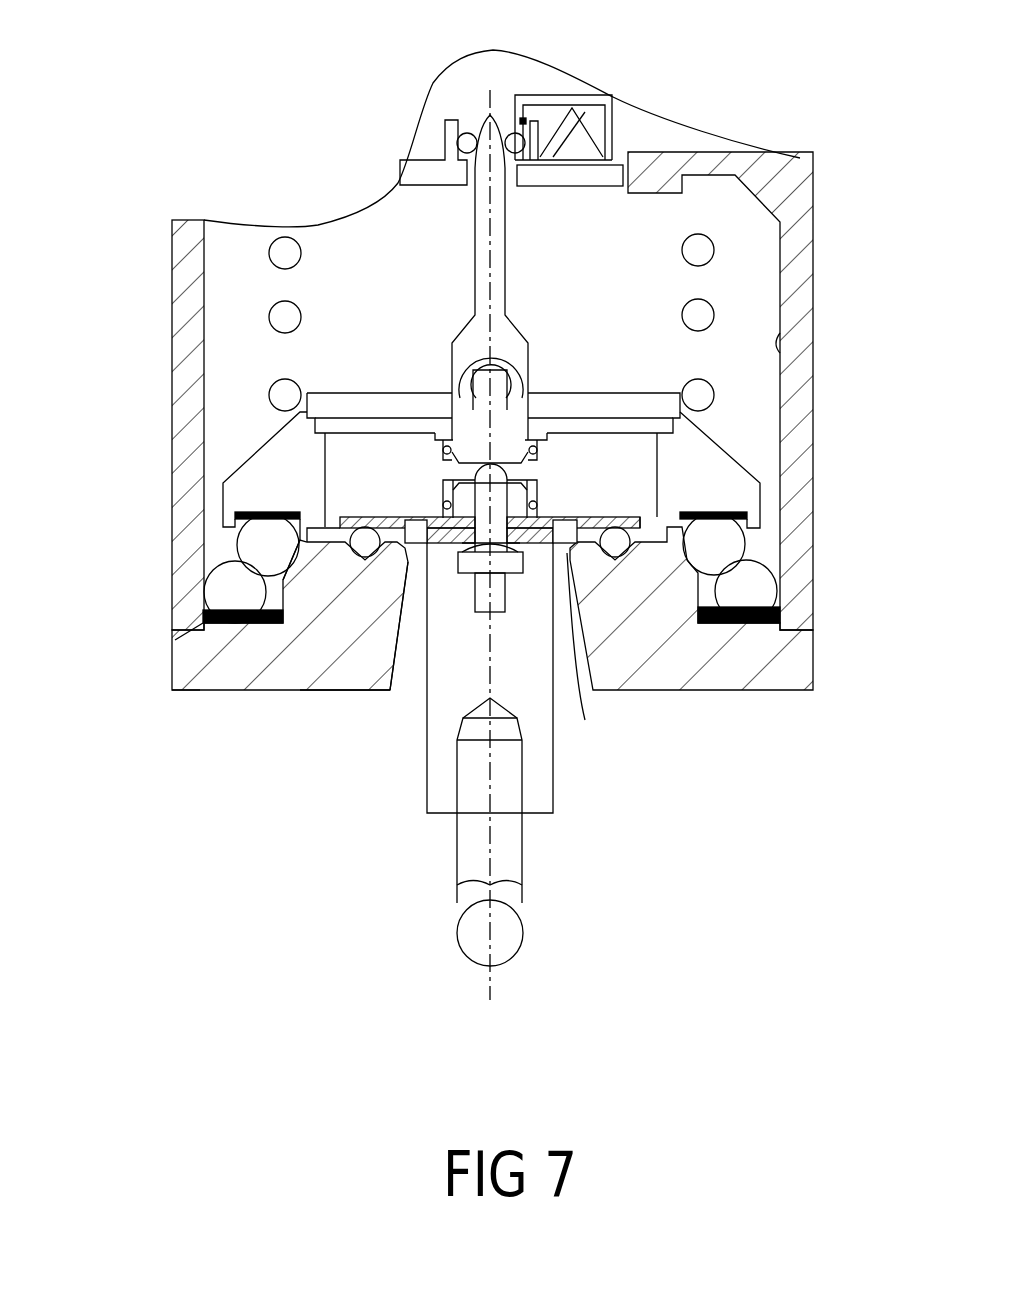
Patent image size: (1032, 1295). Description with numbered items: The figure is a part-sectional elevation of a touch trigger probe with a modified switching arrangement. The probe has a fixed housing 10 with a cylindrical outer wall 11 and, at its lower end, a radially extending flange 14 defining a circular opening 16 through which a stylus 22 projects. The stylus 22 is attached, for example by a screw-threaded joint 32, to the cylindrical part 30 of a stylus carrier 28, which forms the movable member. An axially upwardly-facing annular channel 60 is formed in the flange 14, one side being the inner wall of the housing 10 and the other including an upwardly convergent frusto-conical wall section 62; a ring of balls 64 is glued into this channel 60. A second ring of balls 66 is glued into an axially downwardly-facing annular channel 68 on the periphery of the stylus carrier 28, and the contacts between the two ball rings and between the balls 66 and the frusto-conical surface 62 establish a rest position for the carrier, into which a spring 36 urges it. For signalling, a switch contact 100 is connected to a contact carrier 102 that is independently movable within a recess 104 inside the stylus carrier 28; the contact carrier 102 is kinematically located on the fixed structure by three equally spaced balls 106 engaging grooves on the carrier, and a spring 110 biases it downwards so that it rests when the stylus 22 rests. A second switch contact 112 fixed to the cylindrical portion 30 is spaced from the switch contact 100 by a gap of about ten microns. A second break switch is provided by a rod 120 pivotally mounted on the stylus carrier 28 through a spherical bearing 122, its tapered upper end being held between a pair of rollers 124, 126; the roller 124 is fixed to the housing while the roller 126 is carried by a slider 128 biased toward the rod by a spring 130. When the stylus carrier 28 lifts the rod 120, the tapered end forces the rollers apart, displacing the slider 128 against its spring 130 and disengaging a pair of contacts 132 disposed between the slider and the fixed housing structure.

The housing 10 is at (812, 275).
The cylindrical outer wall 11 is at (780, 335).
The flange 14 is at (322, 688).
The opening 16 is at (407, 680).
The stylus 22 is at (475, 848).
The stylus carrier 28 is at (755, 500).
The cylindrical part 30 is at (547, 762).
The screw-threaded joint 32 is at (523, 800).
The spring 36 is at (712, 250).
The annular channel 60 is at (303, 537).
The frusto-conical wall section 62 is at (173, 688).
The ring of balls 64 is at (213, 592).
The second ring of balls 66 is at (248, 542).
The annular channel 68 is at (238, 517).
The switch contact 100 is at (585, 720).
The contact carrier 102 is at (645, 452).
The recess 104 is at (700, 430).
The balls 106 is at (622, 547).
The spring 110 is at (443, 480).
The second switch contact 112 is at (460, 575).
The rod 120 is at (483, 264).
The spherical bearing 122 is at (463, 387).
The roller 124 is at (468, 133).
The roller 126 is at (507, 133).
The slider 128 is at (620, 163).
The spring 130 is at (590, 135).
The pair of contacts 132 is at (521, 124).